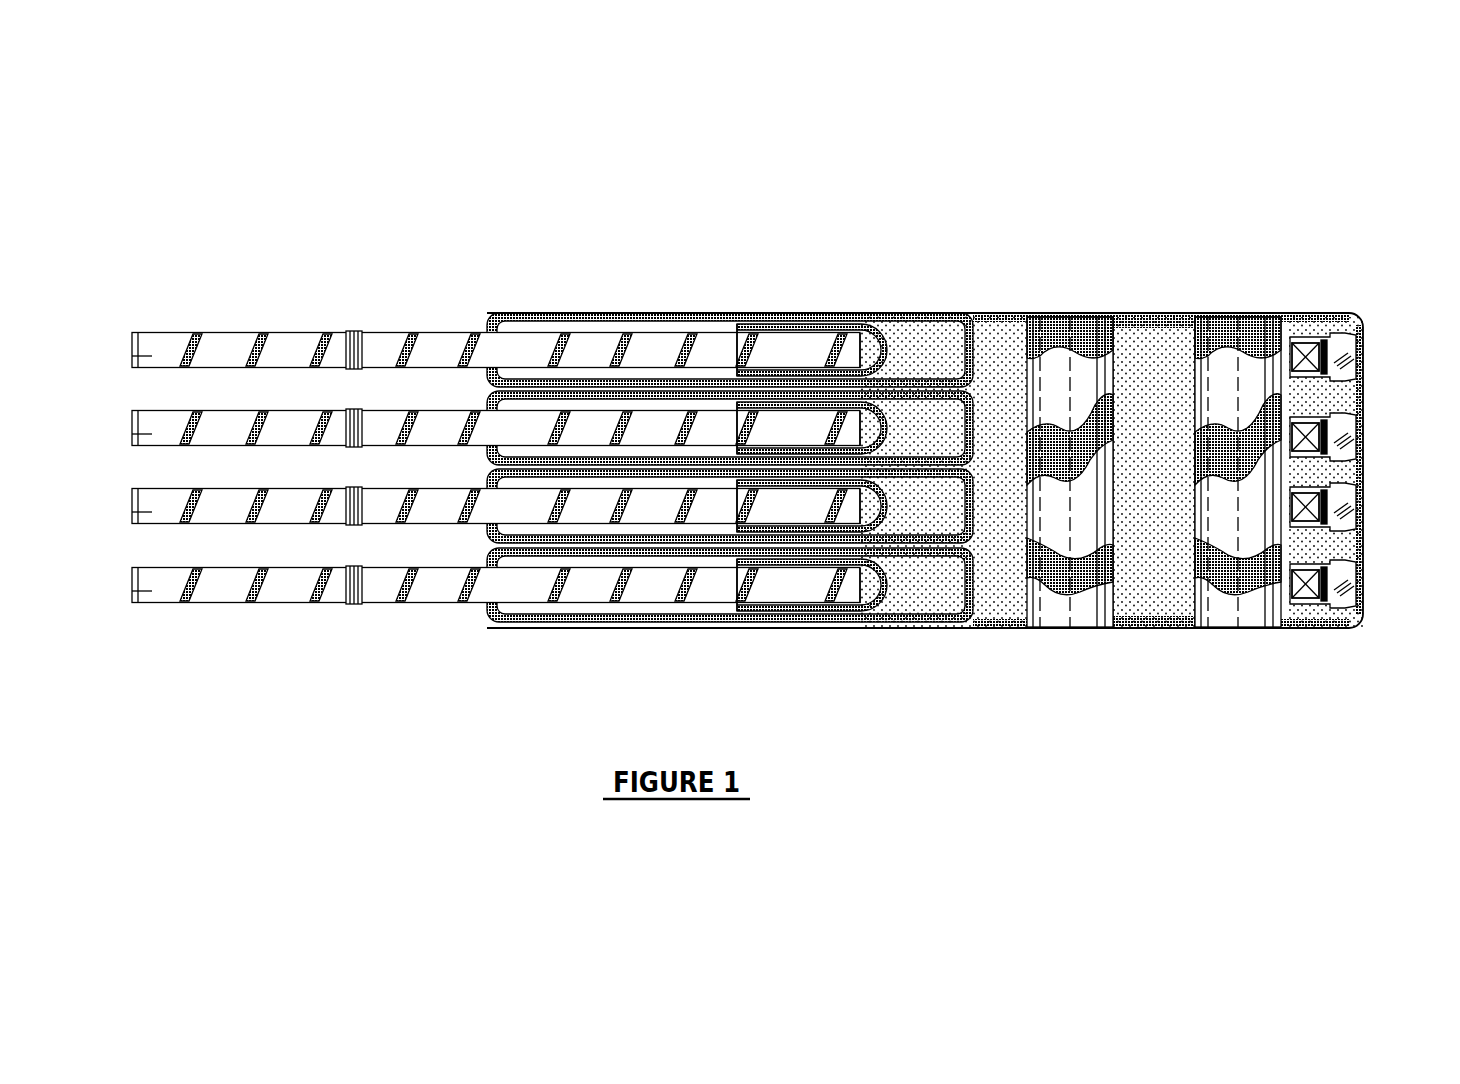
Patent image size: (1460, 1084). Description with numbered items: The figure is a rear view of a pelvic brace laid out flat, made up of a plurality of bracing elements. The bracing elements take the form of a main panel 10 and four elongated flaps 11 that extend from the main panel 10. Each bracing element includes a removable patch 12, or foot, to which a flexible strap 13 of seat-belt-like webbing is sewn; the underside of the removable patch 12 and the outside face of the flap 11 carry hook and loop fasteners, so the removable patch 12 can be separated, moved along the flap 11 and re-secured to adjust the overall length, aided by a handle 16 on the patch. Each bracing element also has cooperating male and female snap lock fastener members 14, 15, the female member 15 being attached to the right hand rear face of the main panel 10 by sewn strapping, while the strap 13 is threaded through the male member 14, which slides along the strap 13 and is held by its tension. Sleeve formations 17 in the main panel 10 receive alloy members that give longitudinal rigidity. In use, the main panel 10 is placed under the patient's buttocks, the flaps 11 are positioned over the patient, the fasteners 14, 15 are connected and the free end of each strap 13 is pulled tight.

The main panel 10 is at (1151, 368).
The elongated flap 11 is at (497, 318).
The removable patch 12 is at (815, 318).
The flexible strap 13 is at (165, 347).
The male snap lock fastener member 14 is at (348, 338).
The female snap lock fastener member 15 is at (1323, 343).
The handle 16 is at (905, 325).
The sleeve formation 17 is at (1068, 380).